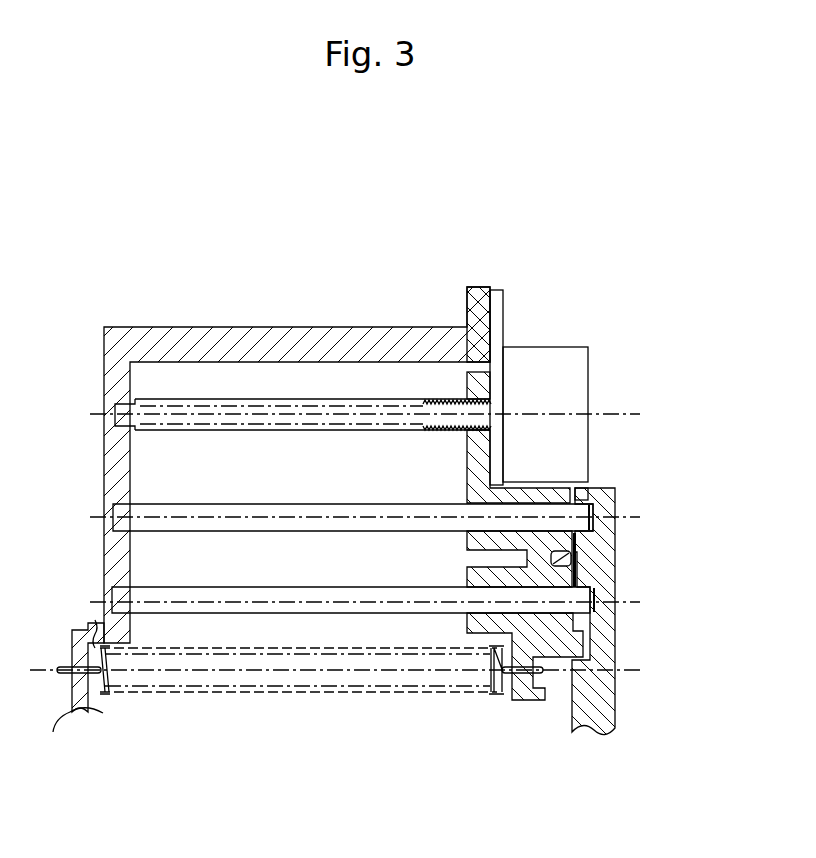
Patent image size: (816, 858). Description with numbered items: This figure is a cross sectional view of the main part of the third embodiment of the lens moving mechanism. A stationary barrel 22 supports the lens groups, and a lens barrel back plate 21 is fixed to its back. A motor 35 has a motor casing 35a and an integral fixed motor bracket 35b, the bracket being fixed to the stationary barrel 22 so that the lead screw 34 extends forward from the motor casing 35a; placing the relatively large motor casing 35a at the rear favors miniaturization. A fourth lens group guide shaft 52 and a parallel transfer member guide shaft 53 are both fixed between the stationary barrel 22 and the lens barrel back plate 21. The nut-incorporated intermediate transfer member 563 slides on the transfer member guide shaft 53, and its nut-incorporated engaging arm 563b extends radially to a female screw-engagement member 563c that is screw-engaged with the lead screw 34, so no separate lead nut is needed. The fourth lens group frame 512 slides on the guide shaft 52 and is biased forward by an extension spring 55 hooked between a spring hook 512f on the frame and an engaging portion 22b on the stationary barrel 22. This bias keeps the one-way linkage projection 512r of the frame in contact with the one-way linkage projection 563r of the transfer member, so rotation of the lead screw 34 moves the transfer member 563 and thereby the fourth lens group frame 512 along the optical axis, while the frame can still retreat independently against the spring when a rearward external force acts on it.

The lens barrel back plate 21 is at (610, 710).
The stationary barrel 22 is at (340, 340).
The engaging portion 22b is at (66, 713).
The lead screw 34 is at (260, 406).
The motor 35 is at (563, 349).
The motor casing 35a is at (570, 347).
The fixed motor bracket 35b is at (496, 297).
The fourth lens group guide shaft 52 is at (154, 592).
The transfer member guide shaft 53 is at (154, 508).
The extension spring 55 is at (487, 678).
The fourth lens group frame 512 is at (597, 688).
The spring hook 512f is at (518, 701).
The one-way linkage projection 512r is at (548, 566).
The nut-incorporated intermediate transfer member 563 is at (583, 434).
The nut-incorporated engaging arm 563b is at (480, 462).
The female screw-engagement member 563c is at (492, 408).
The one-way linkage projection 563r is at (574, 585).